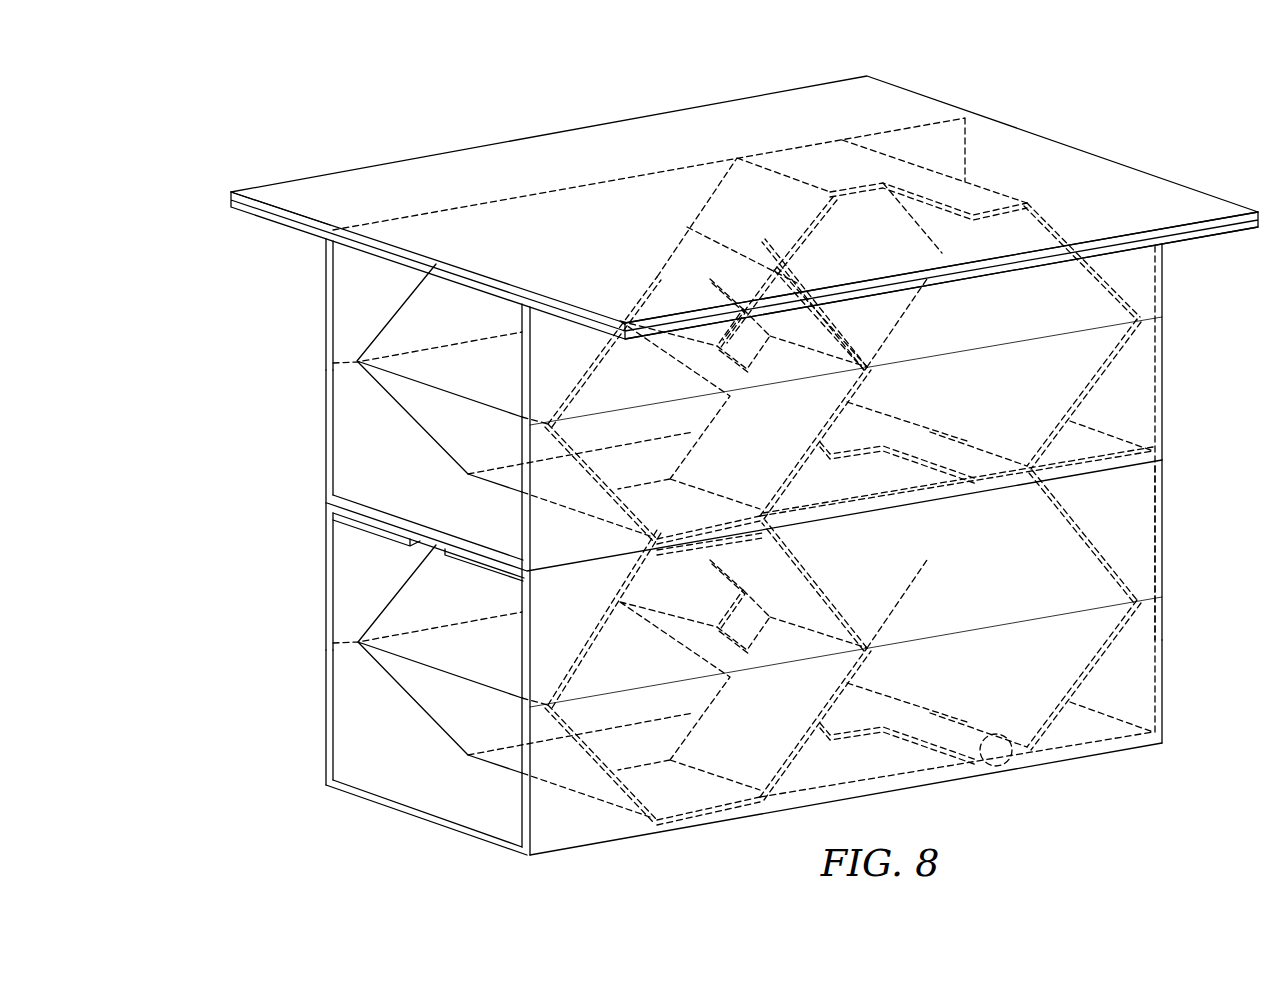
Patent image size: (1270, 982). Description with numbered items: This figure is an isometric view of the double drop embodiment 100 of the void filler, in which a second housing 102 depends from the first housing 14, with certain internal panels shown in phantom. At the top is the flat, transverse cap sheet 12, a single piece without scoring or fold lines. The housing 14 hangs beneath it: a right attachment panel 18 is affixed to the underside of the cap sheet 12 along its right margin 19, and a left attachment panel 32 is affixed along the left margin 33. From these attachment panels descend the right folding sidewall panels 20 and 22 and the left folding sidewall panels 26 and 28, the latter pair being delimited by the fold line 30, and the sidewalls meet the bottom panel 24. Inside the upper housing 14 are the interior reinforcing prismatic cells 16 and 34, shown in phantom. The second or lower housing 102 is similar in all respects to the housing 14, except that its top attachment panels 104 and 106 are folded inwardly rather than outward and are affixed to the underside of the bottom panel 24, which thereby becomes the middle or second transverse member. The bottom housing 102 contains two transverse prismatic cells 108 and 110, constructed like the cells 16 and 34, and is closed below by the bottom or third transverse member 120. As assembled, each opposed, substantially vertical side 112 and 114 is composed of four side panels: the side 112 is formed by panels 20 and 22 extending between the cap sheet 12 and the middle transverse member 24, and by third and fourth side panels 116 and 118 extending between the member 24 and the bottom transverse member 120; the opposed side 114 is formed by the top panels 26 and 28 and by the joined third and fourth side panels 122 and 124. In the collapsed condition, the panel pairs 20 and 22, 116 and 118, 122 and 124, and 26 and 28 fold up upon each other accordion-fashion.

The cap sheet 12 is at (584, 171).
The housing 14 is at (717, 486).
The prismatic member 16 is at (408, 395).
The right attachment panel 18 is at (1216, 238).
The right margin 19 is at (1200, 192).
The right folding sidewall panel 20 is at (1160, 285).
The right folding sidewall panel 22 is at (1160, 355).
The bottom panel 24 is at (393, 491).
The left folding sidewall panel 26 is at (345, 476).
The left folding sidewall panel 28 is at (345, 328).
The fold line 30 is at (346, 366).
The left attachment panel 32 is at (280, 228).
The left margin 33 is at (752, 94).
The prismatic cell 34 is at (1098, 378).
The double drop embodiment 100 is at (740, 676).
The second housing 102 is at (1148, 637).
The top attachment panel 104 is at (382, 536).
The top attachment panel 106 is at (463, 564).
The prismatic cell 108 is at (403, 682).
The prismatic cell 110 is at (997, 766).
The side 112 is at (598, 836).
The side 114 is at (345, 546).
The third side panel 116 is at (1160, 568).
The fourth side panel 118 is at (1160, 705).
The third transverse member 120 is at (406, 768).
The third side panel 122 is at (360, 622).
The fourth side panel 124 is at (348, 736).